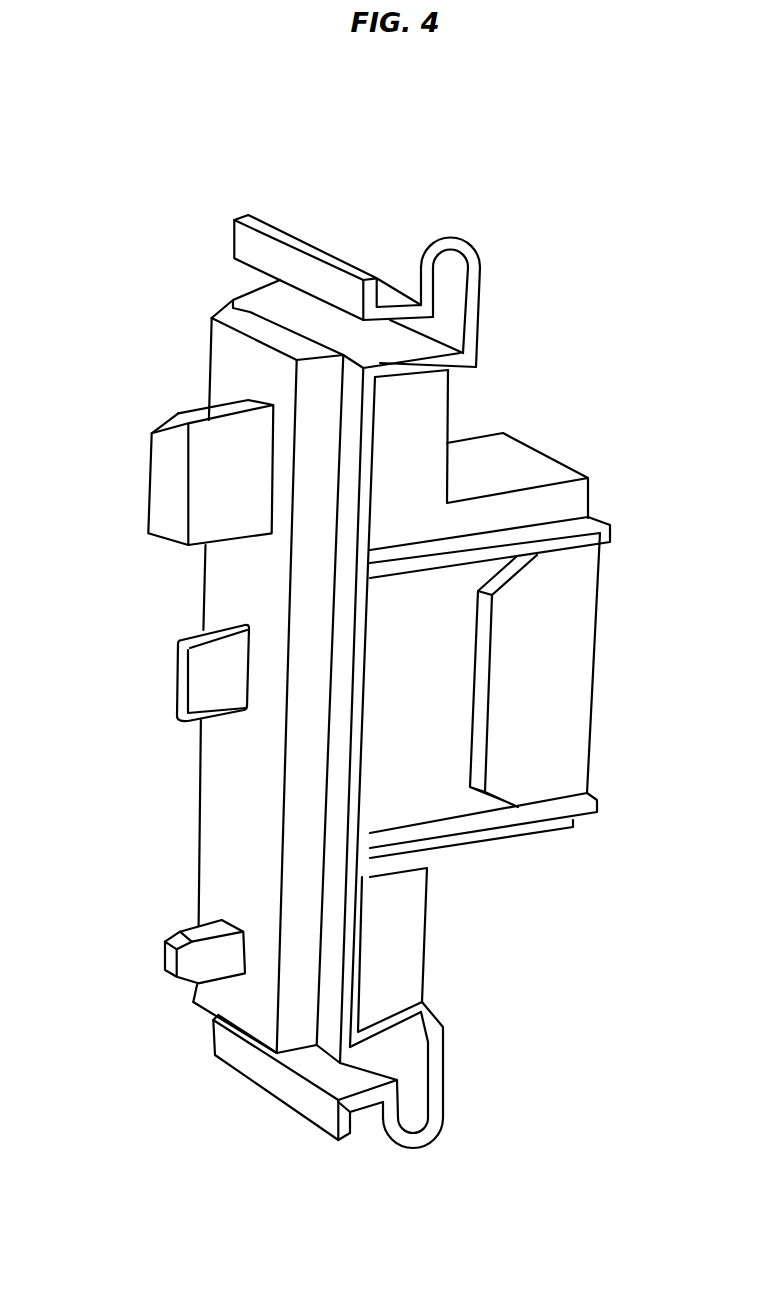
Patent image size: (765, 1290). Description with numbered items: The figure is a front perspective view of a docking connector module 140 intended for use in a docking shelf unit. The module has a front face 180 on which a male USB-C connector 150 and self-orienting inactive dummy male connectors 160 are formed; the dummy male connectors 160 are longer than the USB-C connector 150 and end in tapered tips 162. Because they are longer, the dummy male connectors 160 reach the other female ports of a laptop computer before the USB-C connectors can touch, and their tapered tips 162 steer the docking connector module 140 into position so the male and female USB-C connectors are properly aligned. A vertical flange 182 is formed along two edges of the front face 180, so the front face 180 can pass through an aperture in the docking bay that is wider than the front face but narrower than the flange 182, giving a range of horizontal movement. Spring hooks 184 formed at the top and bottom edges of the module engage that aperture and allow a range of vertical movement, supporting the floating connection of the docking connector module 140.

The docking connector module 140 is at (528, 131).
The male USB-C connector 150 is at (178, 680).
The self-orienting inactive dummy male connector 160 is at (157, 478).
The tapered tip 162 is at (153, 412).
The front face 180 is at (205, 812).
The vertical flange 182 is at (362, 739).
The spring hook 184 is at (449, 228).